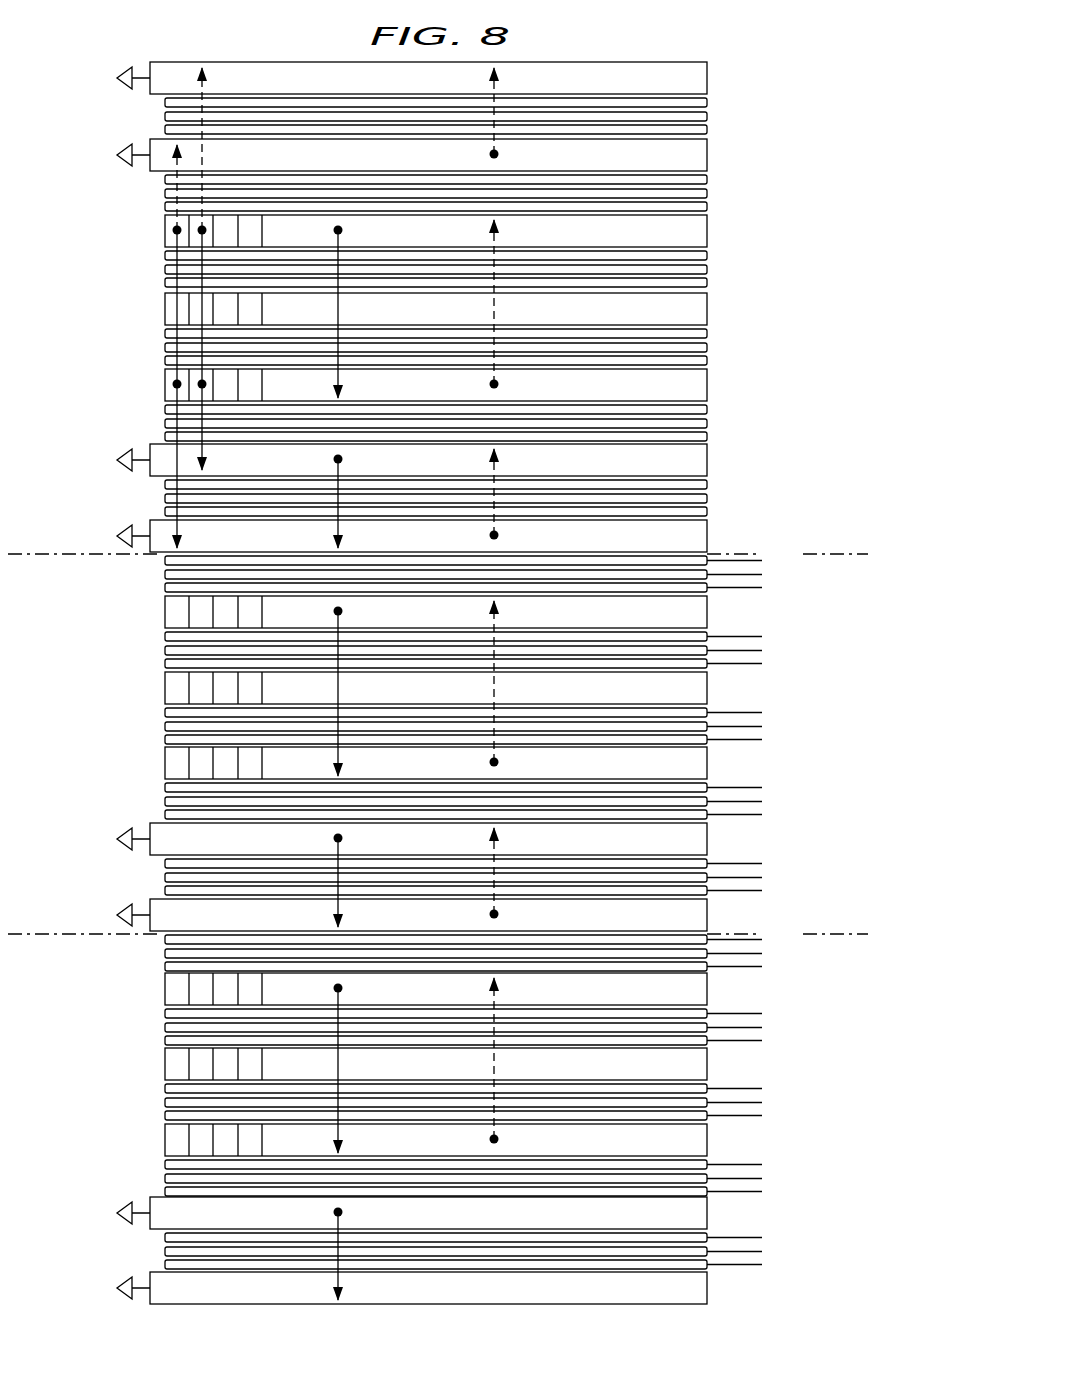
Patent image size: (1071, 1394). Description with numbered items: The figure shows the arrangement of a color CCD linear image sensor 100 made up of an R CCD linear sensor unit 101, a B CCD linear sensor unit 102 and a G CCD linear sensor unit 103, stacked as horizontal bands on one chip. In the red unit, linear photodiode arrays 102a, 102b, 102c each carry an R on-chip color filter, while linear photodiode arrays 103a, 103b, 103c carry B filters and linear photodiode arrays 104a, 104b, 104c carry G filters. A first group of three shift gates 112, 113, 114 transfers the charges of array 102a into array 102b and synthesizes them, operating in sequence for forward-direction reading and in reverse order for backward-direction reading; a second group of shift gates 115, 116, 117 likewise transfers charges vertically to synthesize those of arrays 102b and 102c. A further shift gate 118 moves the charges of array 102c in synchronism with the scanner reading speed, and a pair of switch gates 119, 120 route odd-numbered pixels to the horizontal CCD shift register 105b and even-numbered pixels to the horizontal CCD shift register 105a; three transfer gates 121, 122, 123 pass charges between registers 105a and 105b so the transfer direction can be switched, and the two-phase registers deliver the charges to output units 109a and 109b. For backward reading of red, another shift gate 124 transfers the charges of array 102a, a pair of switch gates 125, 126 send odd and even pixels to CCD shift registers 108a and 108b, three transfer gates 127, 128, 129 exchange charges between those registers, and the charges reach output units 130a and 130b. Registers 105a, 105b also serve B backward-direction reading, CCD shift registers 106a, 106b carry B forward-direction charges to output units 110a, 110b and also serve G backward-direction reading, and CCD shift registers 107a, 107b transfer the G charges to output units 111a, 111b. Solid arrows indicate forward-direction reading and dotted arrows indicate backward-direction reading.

The color CCD linear image sensor 100 is at (622, 50).
The R CCD linear sensor unit 101 is at (118, 295).
The B CCD linear sensor unit 102 is at (107, 690).
The G CCD linear sensor unit 103 is at (118, 1065).
The linear photodiode array 102a is at (436, 231).
The linear photodiode array 102b is at (436, 309).
The linear photodiode array 102c is at (436, 385).
The linear photodiode array 103a is at (436, 612).
The linear photodiode array 103b is at (436, 688).
The linear photodiode array 103c is at (436, 763).
The linear photodiode array 104a is at (436, 989).
The linear photodiode array 104b is at (436, 1064).
The linear photodiode array 104c is at (436, 1140).
The CCD shift register 105a is at (428, 460).
The CCD shift register 105b is at (428, 536).
The CCD shift register 106a is at (428, 839).
The CCD shift register 106b is at (428, 915).
The CCD shift register 107a is at (428, 1213).
The CCD shift register 107b is at (428, 1288).
The CCD shift register 108a is at (428, 155).
The CCD shift register 108b is at (428, 78).
The output unit 109a is at (87, 447).
The output unit 109b is at (87, 523).
The output unit 110a is at (87, 826).
The output unit 110b is at (87, 902).
The output unit 111a is at (103, 1200).
The output unit 111b is at (103, 1275).
The output unit 130a is at (106, 65).
The output unit 130b is at (106, 142).
The shift gate SH1 112 is at (707, 256).
The shift gate SH2 113 is at (707, 270).
The shift gate SH3 114 is at (707, 282).
The shift gate SH4 115 is at (707, 334).
The shift gate SH5 116 is at (707, 348).
The shift gate SH6 117 is at (707, 360).
The shift gate SH7 118 is at (707, 410).
The switch gate SG1 119 is at (707, 424).
The switch gate SG2 120 is at (707, 436).
The transfer gate TG1 121 is at (707, 484).
The transfer gate TG2 122 is at (707, 498).
The transfer gate TG3 123 is at (707, 512).
The shift gate SH8 124 is at (707, 206).
The switch gate SG1 125 is at (707, 194).
The switch gate SG2 126 is at (707, 180).
The transfer gate TG1 127 is at (707, 102).
The transfer gate TG2 128 is at (707, 116).
The transfer gate TG3 129 is at (707, 130).